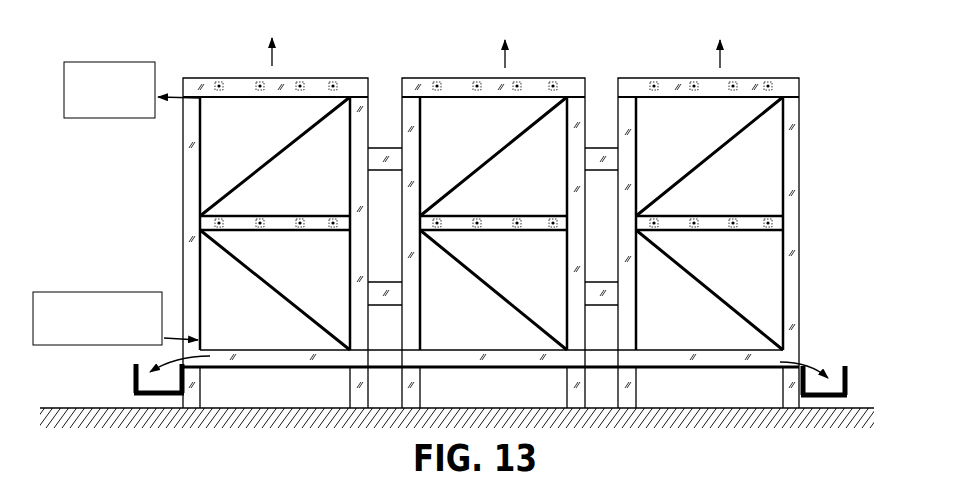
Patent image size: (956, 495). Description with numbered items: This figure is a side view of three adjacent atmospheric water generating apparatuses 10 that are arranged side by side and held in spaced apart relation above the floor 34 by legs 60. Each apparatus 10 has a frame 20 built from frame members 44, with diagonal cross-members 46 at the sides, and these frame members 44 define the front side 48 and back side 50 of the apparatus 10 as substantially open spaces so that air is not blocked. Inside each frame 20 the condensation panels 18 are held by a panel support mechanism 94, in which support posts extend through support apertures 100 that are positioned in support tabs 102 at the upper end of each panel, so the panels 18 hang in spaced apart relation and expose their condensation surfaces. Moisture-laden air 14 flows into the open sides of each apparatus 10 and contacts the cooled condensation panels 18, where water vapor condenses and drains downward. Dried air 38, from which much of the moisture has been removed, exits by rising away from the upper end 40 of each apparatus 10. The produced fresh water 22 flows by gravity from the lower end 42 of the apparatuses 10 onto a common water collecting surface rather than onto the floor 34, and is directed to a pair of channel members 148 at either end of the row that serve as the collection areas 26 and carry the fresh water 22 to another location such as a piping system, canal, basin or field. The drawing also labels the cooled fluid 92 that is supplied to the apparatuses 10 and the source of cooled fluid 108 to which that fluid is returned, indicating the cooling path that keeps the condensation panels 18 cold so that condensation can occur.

The atmospheric water generating apparatus 10 is at (181, 75).
The moisture-laden air 14 is at (156, 212).
The condensation panels 18 is at (440, 135).
The frame 20 is at (181, 178).
The produced fresh water 22 is at (170, 368).
The collection area 26 is at (129, 376).
The floor 34 is at (540, 407).
The dried air 38 is at (496, 39).
The upper end 40 is at (806, 80).
The lower end 42 is at (803, 358).
The frame members 44 is at (190, 135).
The cross-members 46 is at (287, 143).
The front side 48 is at (165, 243).
The back side 50 is at (813, 305).
The legs 60 is at (358, 398).
The cooled fluid 92 is at (115, 319).
The panel support mechanism 94 is at (218, 76).
The support apertures 100 is at (303, 85).
The support tabs 102 is at (259, 82).
The source of cooled fluid 108 is at (132, 90).
The channel members 148 is at (148, 394).